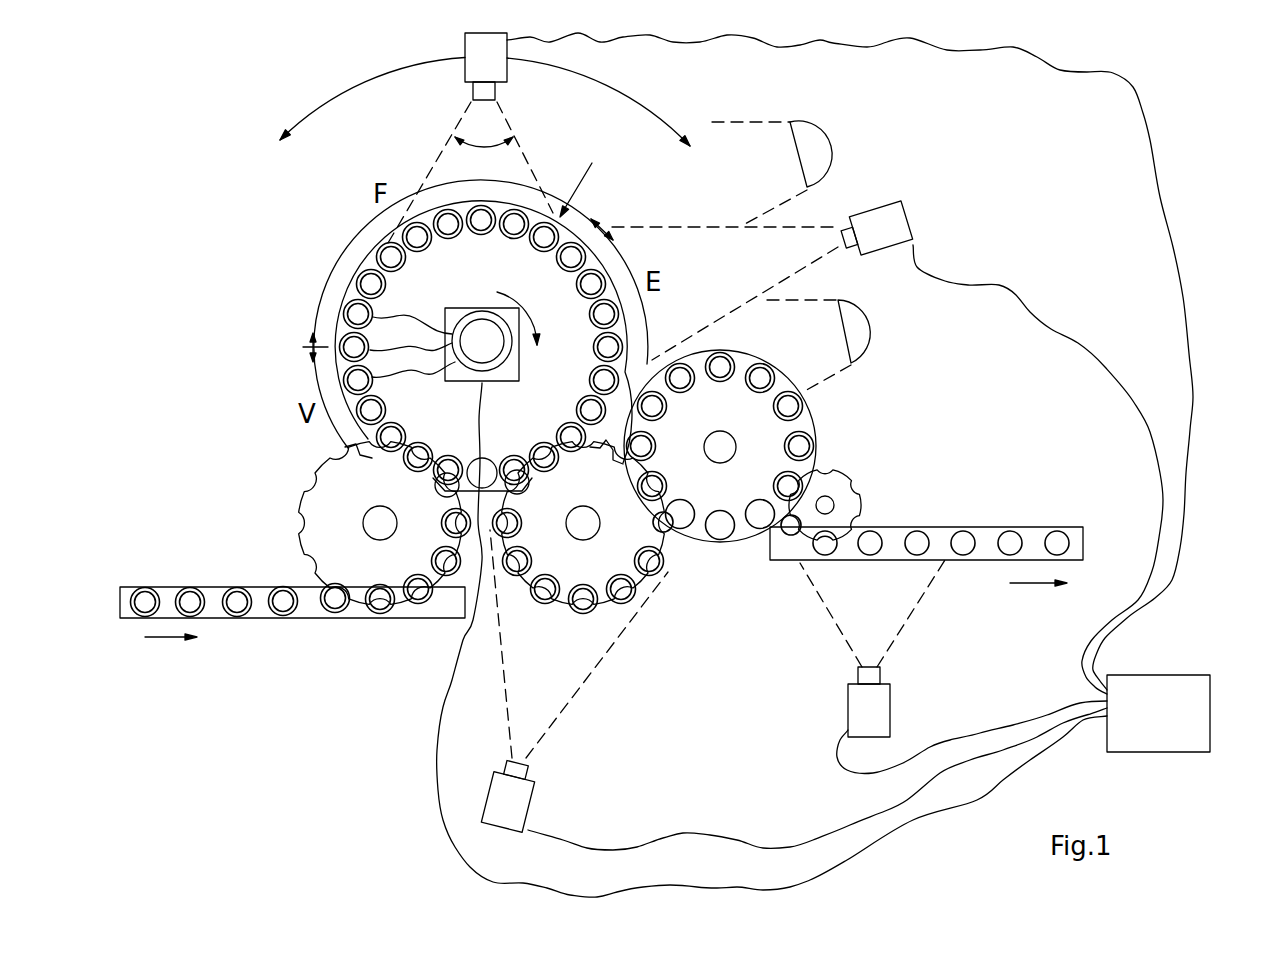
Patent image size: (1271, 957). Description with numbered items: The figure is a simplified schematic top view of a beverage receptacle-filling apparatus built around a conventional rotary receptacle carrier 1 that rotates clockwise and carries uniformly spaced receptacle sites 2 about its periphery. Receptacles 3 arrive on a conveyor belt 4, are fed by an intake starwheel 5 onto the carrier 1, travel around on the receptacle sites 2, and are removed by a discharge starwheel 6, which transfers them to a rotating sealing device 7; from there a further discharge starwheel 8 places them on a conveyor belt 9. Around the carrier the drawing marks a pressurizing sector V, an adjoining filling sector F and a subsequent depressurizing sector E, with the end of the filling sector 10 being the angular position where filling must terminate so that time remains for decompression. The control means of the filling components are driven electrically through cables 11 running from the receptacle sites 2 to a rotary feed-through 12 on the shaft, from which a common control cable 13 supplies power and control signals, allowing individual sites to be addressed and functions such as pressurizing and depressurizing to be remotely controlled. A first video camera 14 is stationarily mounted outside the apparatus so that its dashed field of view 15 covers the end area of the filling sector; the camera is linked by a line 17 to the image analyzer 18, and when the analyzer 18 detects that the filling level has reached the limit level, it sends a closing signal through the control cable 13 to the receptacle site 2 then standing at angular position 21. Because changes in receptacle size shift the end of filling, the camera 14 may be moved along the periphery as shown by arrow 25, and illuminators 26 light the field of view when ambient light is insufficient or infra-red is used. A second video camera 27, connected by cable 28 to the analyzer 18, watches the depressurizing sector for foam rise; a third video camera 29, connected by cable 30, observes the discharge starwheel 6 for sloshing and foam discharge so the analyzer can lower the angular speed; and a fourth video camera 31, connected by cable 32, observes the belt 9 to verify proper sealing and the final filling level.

The rotary receptacle carrier 1 is at (440, 285).
The receptacle sites 2 is at (355, 280).
The receptacles 3 is at (357, 380).
The conveyor belt 4 is at (305, 605).
The intake starwheel 5 is at (332, 492).
The discharge starwheel 6 is at (573, 575).
The rotating sealing device 7 is at (695, 527).
The discharge starwheel 8 is at (840, 492).
The conveyor belt 9 is at (935, 540).
The end of the filling sector 10 is at (603, 228).
The cables 11 is at (407, 320).
The rotary feed-through 12 is at (497, 381).
The common control cable 13 is at (437, 787).
The first video camera 14 is at (483, 63).
The field of view 15 is at (484, 137).
The signal line 17 is at (1147, 135).
The image analyzer 18 is at (1158, 693).
The angular position 21 is at (583, 170).
The arrow 25 is at (340, 92).
The illuminators 26 is at (803, 138).
The second video camera 27 is at (890, 232).
The cable 28 is at (1030, 312).
The third video camera 29 is at (520, 795).
The cable 30 is at (663, 838).
The fourth video camera 31 is at (860, 708).
The cable 32 is at (952, 743).